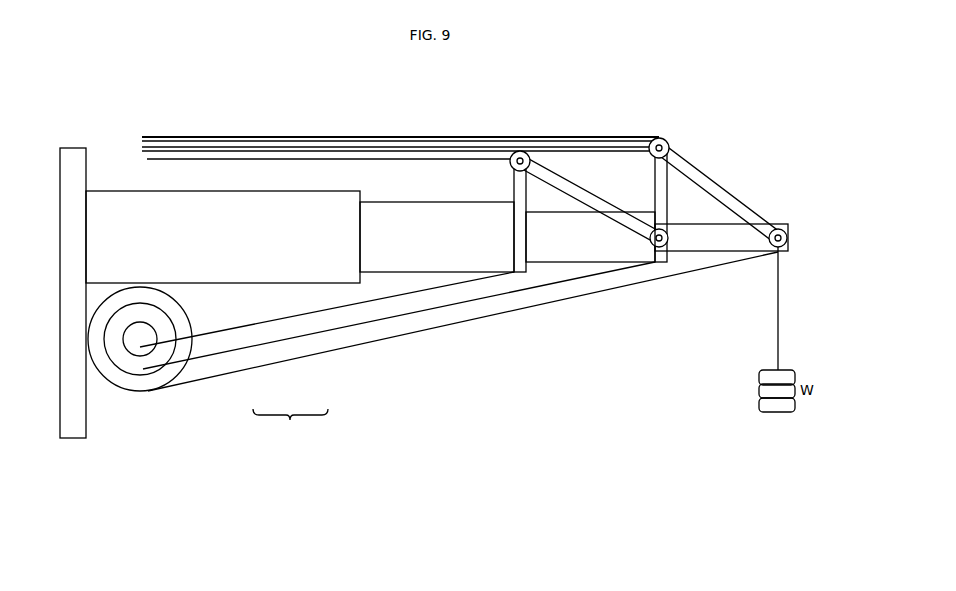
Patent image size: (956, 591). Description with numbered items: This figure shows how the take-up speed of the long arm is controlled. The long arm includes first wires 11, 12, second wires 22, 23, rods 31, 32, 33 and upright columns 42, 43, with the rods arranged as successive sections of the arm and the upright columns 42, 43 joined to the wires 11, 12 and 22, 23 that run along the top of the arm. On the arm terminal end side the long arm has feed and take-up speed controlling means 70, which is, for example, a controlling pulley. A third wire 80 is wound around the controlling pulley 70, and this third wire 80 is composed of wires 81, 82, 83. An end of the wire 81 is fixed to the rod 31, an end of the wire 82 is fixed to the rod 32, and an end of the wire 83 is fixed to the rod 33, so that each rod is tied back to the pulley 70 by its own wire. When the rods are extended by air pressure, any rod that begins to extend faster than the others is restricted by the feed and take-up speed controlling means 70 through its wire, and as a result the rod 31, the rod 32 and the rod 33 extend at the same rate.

The first wire 11 is at (257, 136).
The first wire 12 is at (307, 150).
The second wire 22 is at (211, 141).
The second wire 23 is at (383, 157).
The rod 31 is at (720, 252).
The rod 32 is at (586, 263).
The rod 33 is at (450, 276).
The upright column 42 is at (654, 178).
The upright column 43 is at (497, 158).
The feed and take-up speed controlling means 70 is at (141, 396).
The third wire 80 is at (290, 427).
The wire 81 is at (252, 331).
The wire 82 is at (281, 343).
The wire 83 is at (311, 353).